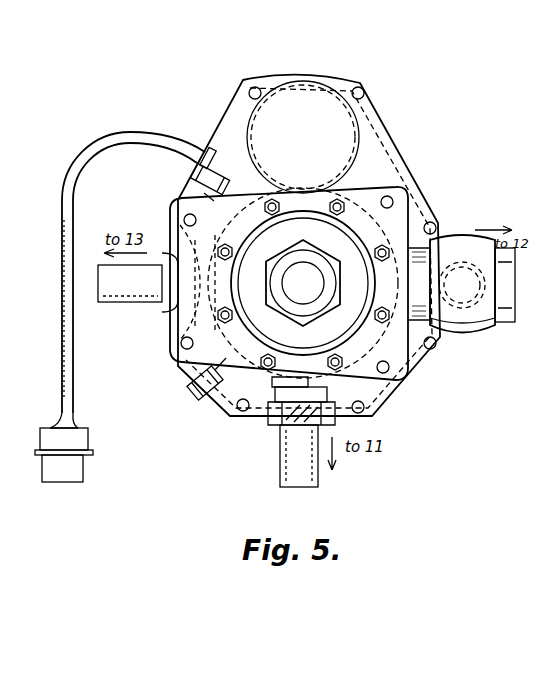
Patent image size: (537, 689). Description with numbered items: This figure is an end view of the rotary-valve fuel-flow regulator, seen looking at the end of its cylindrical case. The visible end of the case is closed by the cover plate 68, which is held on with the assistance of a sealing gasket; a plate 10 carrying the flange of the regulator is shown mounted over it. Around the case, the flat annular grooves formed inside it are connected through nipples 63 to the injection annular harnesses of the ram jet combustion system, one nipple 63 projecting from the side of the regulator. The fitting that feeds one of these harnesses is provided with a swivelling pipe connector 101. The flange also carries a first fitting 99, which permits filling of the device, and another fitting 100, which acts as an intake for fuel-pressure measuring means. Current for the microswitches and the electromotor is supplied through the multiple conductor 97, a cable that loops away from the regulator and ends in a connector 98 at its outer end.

The mounting plate 10 is at (293, 93).
The cover plate 68 is at (372, 116).
The nipple 63 is at (130, 292).
The multiple conductor 97 is at (131, 136).
The connector 98 is at (78, 463).
The first fitting 99 is at (205, 392).
The fitting 100 is at (196, 178).
The swivelling pipe connector 101 is at (455, 246).